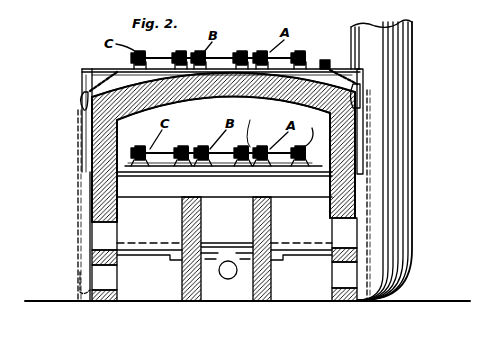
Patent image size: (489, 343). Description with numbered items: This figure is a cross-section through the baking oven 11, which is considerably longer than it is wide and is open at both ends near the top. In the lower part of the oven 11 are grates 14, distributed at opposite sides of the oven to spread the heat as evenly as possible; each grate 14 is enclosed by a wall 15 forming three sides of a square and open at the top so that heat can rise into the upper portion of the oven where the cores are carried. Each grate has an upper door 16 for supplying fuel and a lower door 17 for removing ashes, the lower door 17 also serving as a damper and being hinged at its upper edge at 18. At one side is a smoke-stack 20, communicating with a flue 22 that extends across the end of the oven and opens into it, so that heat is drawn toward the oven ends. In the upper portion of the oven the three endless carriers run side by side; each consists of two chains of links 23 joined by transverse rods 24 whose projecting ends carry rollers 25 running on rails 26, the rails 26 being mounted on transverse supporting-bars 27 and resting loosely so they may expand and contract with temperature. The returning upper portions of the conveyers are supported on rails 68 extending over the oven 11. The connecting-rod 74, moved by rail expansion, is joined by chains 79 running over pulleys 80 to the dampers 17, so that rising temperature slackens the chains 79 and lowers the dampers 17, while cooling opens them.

The oven 11 is at (223, 133).
The grates 14 is at (150, 245).
The wall 15 is at (252, 212).
The upper doors 16 is at (90, 232).
The lower doors 17 is at (82, 280).
The hinges 18 is at (92, 258).
The smoke-stack 20 is at (402, 73).
The flue 22 is at (218, 252).
The links 23 is at (274, 123).
The transverse rods 24 is at (165, 156).
The rollers 25 is at (141, 147).
The rails 26 is at (250, 147).
The transverse supporting-bars 27 is at (200, 172).
The rails 68 is at (257, 52).
The connecting-rod 74 is at (325, 60).
The chains 79 is at (77, 143).
The pulleys 80 is at (78, 101).